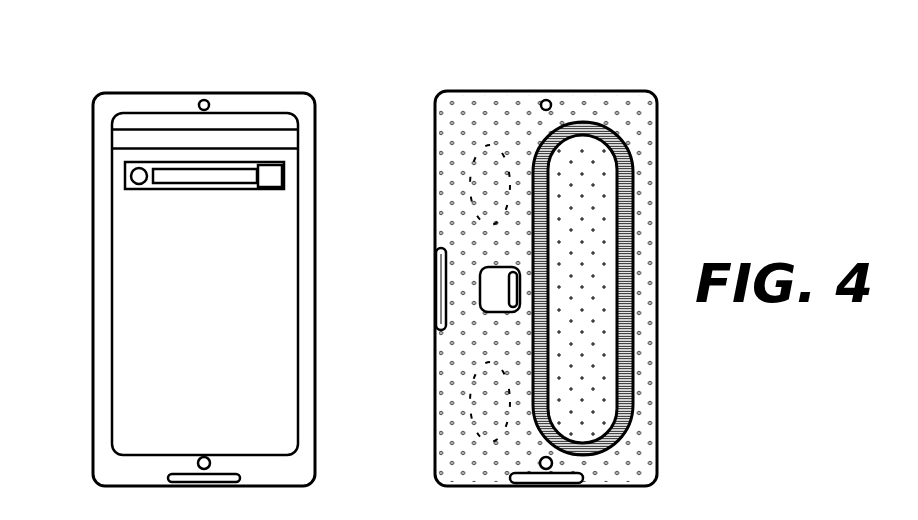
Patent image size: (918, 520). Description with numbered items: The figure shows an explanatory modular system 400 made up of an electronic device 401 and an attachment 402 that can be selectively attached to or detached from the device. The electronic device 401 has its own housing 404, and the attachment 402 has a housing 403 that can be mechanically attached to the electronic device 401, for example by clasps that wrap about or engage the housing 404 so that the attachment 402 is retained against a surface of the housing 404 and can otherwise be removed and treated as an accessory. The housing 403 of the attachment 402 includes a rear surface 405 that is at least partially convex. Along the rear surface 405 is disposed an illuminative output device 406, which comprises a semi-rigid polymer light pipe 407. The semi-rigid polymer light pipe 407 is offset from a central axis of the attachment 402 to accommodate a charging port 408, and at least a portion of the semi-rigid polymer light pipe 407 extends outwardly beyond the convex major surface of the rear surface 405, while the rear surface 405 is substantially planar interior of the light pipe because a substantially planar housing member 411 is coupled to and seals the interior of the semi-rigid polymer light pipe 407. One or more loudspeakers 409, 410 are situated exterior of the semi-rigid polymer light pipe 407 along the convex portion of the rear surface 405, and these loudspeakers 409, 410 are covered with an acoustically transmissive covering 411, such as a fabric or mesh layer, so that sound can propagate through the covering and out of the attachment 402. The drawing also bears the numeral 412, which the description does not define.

The modular system 400 is at (168, 289).
The electronic device 401 is at (84, 314).
The housing 404 is at (92, 428).
The attachment 402 is at (412, 278).
The housing 403 is at (582, 271).
The rear surface 405 is at (580, 269).
The illuminative output device 406 is at (628, 289).
The semi-rigid polymer light pipe 407 is at (622, 397).
The charging port 408 is at (512, 290).
The loudspeaker 409 is at (470, 185).
The loudspeaker 410 is at (467, 393).
The acoustically transmissive covering 411 is at (645, 123).
The touch region 412 is at (583, 318).